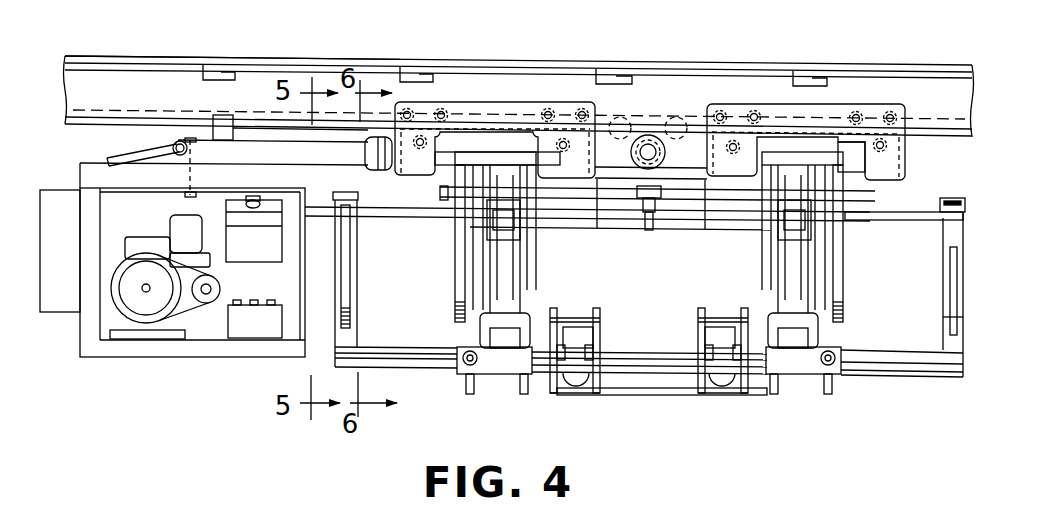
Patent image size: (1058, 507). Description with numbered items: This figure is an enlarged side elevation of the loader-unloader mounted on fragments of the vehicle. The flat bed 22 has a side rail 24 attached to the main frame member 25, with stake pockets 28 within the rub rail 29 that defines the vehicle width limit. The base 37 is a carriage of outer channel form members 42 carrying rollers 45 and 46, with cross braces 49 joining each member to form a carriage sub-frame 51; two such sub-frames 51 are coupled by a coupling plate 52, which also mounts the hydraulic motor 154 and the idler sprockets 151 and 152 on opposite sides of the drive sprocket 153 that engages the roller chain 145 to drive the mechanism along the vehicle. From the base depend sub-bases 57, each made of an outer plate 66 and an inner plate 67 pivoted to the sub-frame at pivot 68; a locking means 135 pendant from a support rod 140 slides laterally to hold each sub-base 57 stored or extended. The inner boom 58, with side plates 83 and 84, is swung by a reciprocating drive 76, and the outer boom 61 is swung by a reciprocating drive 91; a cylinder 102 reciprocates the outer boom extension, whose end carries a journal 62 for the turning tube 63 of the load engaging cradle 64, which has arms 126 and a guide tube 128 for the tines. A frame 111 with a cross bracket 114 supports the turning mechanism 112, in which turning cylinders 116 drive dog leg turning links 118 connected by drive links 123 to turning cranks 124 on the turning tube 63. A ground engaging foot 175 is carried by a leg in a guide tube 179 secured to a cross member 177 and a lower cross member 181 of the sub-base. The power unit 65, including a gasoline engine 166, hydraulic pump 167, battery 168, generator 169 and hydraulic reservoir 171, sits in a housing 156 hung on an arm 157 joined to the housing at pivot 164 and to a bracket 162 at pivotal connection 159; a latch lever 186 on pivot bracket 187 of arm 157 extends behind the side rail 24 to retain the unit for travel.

The flat bed 22 is at (928, 62).
The side rail 24 is at (847, 86).
The rub rail 29 is at (125, 60).
The stake pocket 28 is at (200, 78).
The roller chain 145 is at (261, 102).
The latch lever 186 is at (178, 104).
The carriage sub-frame 51 is at (466, 100).
The outer channel form member 42 is at (405, 102).
The base 37 is at (560, 101).
The pivot 68 is at (498, 158).
The roller 45 is at (868, 115).
The roller 46 is at (886, 150).
The support rod 140 is at (856, 174).
The idler sprocket 151 is at (617, 116).
The idler sprocket 152 is at (678, 116).
The drive sprocket 153 is at (645, 134).
The hydraulic motor 154 is at (634, 170).
The sub-base 57 is at (762, 190).
The inner plate 67 is at (760, 210).
The coupling plate 52 is at (672, 206).
The ground engaging foot 175 is at (636, 200).
The cross member 177 is at (642, 212).
The guide tube 179 is at (650, 231).
The lower cross member 181 is at (592, 204).
The inner boom 58 is at (768, 239).
The inner boom side plate 84 is at (527, 304).
The outer boom 61 is at (766, 312).
The locking means 135 is at (450, 264).
The inner boom side plate 83 is at (820, 262).
The outer plate 66 is at (825, 226).
The reciprocating drive 76 is at (516, 238).
The reciprocating drive 91 is at (497, 296).
The journal 62 is at (492, 376).
The cylinder 102 is at (460, 378).
The dog leg turning link 118 is at (565, 317).
The turning cylinder 116 is at (572, 386).
The drive link 123 is at (595, 320).
The turning mechanism 112 is at (698, 333).
The turning crank 124 is at (700, 356).
The frame 111 is at (618, 397).
The cross bracket 114 is at (680, 396).
The arm 126 is at (355, 338).
The turning tube 63 is at (923, 378).
The guide tube 128 is at (358, 250).
The load engaging cradle 64 is at (334, 282).
The main frame member 25 is at (930, 220).
The bracket 162 is at (368, 166).
The cross brace 49 is at (415, 162).
The pivotal connection 159 is at (397, 165).
The power unit 65 is at (148, 362).
The housing 156 is at (82, 178).
The arm 157 is at (246, 139).
The pivot bracket 187 is at (168, 147).
The pivot 164 is at (195, 186).
The gasoline engine 166 is at (118, 305).
The hydraulic pump 167 is at (192, 265).
The generator 169 is at (152, 240).
The hydraulic reservoir 171 is at (242, 252).
The battery 168 is at (270, 330).